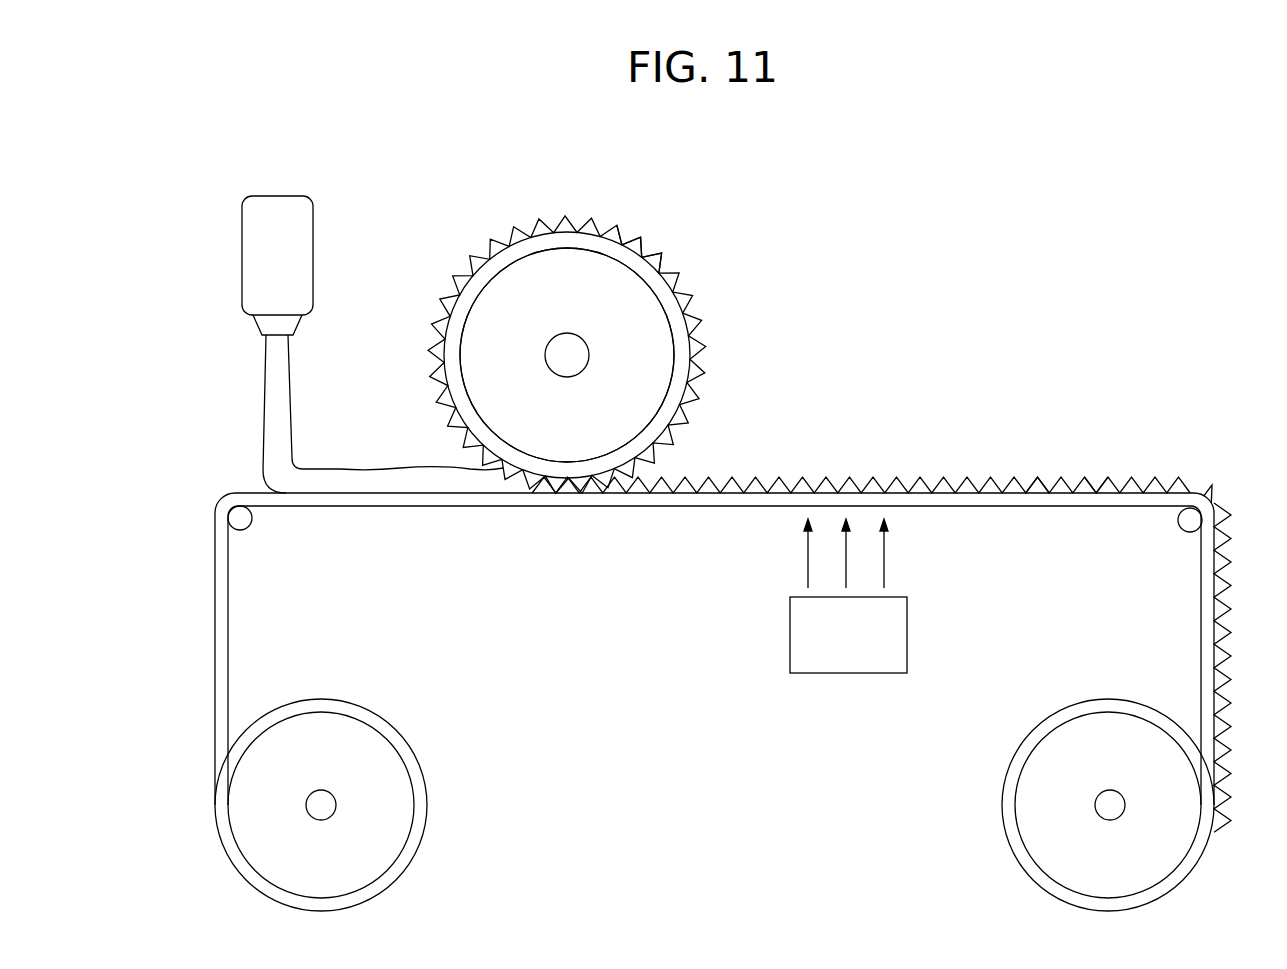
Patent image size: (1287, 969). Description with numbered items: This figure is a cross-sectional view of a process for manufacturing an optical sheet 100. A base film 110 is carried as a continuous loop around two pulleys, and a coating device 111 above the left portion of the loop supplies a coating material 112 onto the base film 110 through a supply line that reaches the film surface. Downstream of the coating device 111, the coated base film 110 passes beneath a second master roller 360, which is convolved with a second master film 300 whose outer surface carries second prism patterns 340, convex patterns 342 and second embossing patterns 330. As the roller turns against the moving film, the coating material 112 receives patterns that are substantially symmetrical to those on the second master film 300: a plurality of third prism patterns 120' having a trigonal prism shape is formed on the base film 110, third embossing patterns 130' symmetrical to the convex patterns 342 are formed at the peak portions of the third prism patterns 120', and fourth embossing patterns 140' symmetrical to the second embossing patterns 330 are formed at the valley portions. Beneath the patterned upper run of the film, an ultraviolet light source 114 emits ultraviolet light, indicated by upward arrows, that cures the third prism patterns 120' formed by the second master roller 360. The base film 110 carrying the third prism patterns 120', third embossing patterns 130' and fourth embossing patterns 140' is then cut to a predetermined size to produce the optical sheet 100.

The optical sheet 100 is at (1214, 456).
The base film 110 is at (222, 628).
The coating device 111 is at (253, 256).
The coating material 112 is at (272, 425).
The ultraviolet light source 114 is at (843, 662).
The third prism patterns 120' is at (861, 442).
The third embossing patterns 130' is at (1057, 442).
The fourth embossing patterns 140' is at (1116, 442).
The second master film 300 is at (590, 247).
The second embossing patterns 330 is at (683, 293).
The second prism patterns 340 is at (633, 237).
The convex patterns 342 is at (650, 250).
The second master roller 360 is at (578, 260).